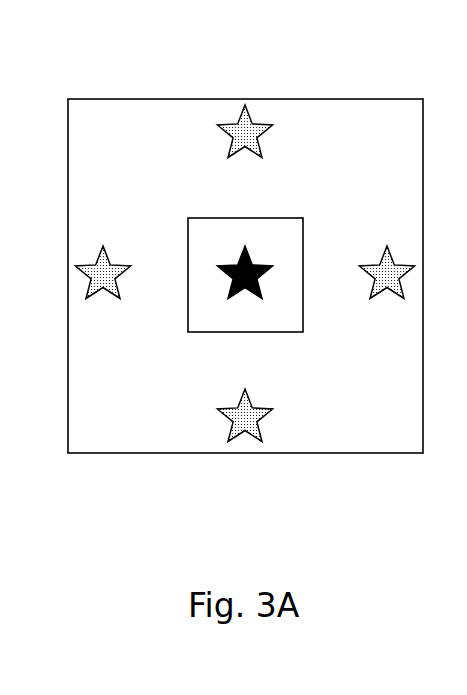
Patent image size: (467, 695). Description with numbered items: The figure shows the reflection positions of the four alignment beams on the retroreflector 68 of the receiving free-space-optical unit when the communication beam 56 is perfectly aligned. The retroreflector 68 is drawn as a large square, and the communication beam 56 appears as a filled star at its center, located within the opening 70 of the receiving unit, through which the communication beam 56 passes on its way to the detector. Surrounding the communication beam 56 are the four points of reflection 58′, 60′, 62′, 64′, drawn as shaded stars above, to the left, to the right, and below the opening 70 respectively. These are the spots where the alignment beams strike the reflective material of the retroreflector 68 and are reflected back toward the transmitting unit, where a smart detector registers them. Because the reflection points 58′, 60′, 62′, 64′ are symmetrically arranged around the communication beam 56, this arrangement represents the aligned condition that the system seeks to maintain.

The communication beam 56 is at (257, 293).
The point of reflection 58′ is at (265, 122).
The point of reflection 60′ is at (113, 263).
The point of reflection 62′ is at (398, 257).
The point of reflection 64′ is at (237, 433).
The retroreflector 68 is at (170, 176).
The opening 70 is at (188, 318).